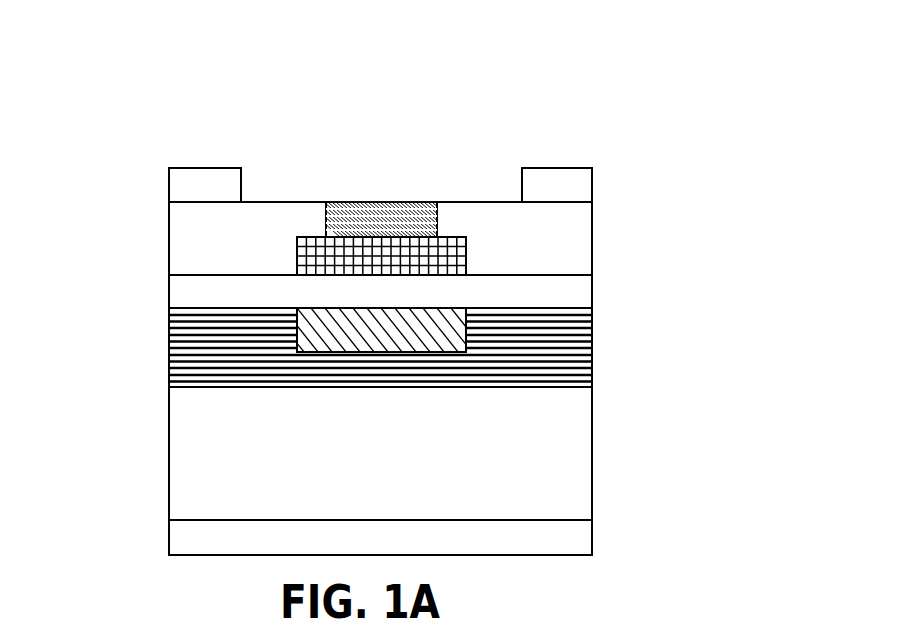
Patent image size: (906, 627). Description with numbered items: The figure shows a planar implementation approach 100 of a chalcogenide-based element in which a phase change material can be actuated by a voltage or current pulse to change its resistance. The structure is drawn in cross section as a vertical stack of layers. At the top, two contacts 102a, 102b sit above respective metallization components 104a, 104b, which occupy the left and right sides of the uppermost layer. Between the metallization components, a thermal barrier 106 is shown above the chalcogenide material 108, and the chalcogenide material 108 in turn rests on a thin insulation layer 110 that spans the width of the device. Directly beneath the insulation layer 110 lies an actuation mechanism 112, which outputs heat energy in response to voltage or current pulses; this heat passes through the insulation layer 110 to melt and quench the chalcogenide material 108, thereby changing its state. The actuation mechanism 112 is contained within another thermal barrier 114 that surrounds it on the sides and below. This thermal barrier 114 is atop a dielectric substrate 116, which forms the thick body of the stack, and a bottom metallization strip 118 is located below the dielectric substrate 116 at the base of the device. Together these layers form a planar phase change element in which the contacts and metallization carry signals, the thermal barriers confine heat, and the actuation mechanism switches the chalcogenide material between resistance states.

The planar implementation approach 100 is at (478, 83).
The contact 102a is at (205, 175).
The contact 102b is at (543, 177).
The metallization component 104a is at (192, 236).
The metallization component 104b is at (580, 219).
The thermal barrier 106 is at (417, 208).
The chalcogenide material 108 is at (373, 253).
The thin insulation layer 110 is at (583, 293).
The actuation mechanism 112 is at (407, 333).
The thermal barrier 114 is at (570, 357).
The dielectric substrate 116 is at (580, 449).
The bottom metallization strip 118 is at (570, 537).